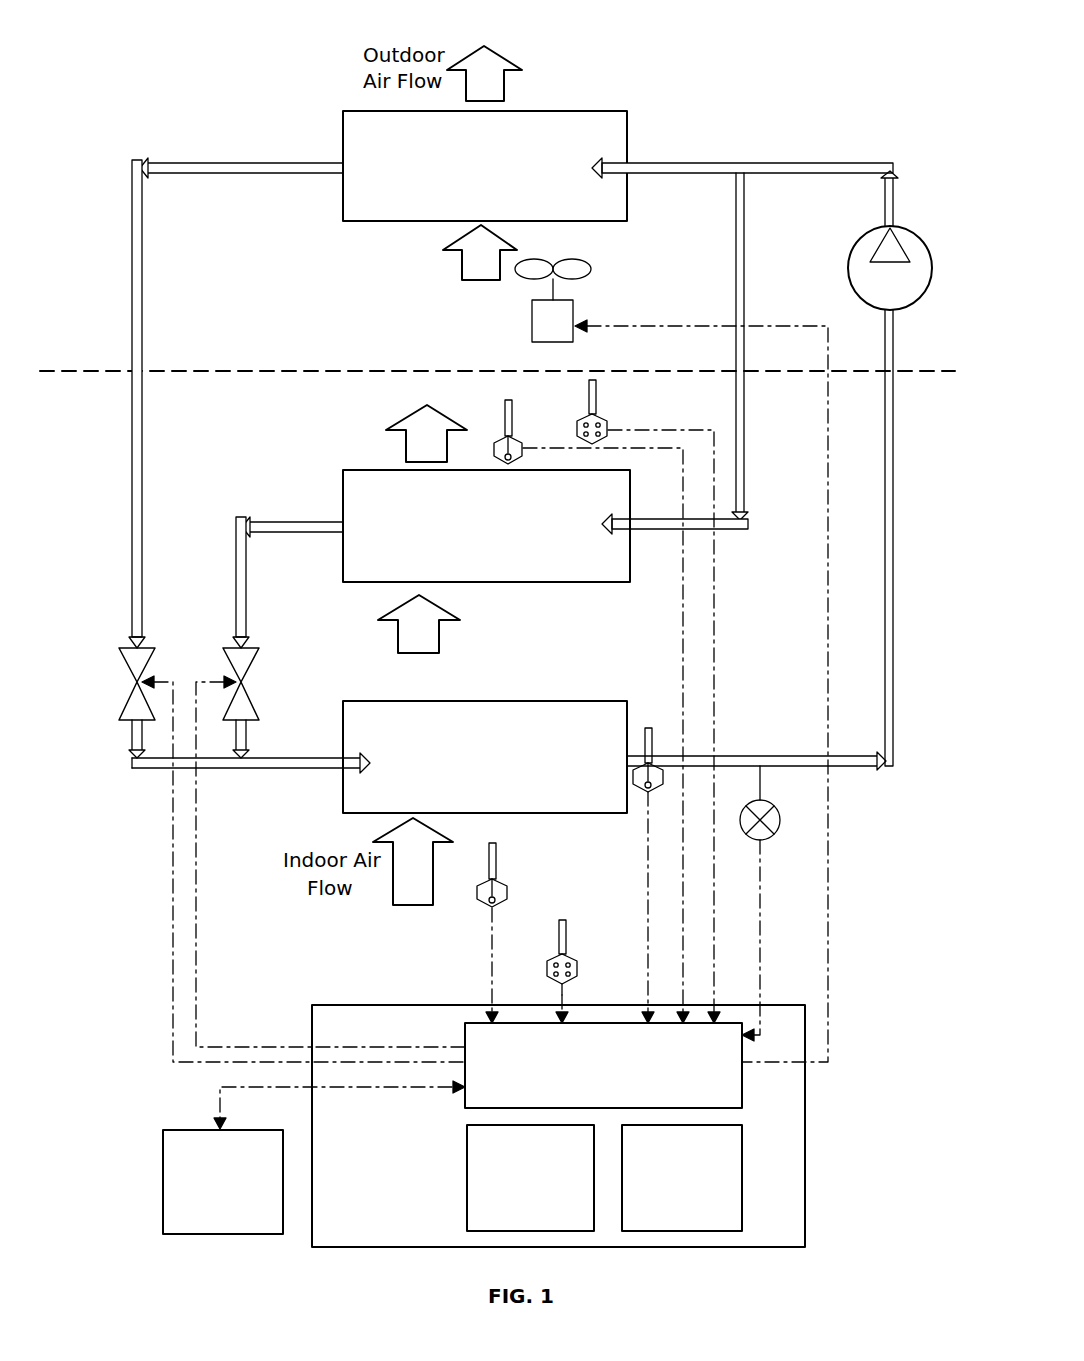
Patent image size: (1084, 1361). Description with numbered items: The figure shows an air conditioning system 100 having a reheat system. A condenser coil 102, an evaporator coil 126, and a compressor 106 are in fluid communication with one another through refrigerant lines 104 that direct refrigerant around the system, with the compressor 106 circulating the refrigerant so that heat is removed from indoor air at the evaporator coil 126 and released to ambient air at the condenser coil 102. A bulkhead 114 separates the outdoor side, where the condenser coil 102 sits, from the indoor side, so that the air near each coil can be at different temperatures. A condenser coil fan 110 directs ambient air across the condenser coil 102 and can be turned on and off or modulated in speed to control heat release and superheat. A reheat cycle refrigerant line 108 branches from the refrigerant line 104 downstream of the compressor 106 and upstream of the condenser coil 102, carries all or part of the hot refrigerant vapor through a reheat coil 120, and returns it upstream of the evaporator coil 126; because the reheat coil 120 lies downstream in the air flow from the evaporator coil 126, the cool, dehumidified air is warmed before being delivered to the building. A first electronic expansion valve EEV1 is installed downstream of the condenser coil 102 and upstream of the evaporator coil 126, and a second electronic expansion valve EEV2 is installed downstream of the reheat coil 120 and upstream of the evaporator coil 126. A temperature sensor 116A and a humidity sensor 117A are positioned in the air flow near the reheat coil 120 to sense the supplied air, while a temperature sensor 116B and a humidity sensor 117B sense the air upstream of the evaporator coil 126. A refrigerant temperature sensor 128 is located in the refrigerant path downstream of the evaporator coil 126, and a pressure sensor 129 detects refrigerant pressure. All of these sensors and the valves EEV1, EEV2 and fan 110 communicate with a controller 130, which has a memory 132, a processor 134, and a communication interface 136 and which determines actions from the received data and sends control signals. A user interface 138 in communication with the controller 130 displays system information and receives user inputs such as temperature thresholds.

The air conditioning system 100 is at (285, 52).
The condenser coil 102 is at (485, 166).
The refrigerant line 104 is at (172, 162).
The compressor 106 is at (908, 228).
The reheat cycle refrigerant line 108 is at (736, 290).
The condenser coil fan 110 is at (532, 335).
The bulkhead 114 is at (250, 370).
The temperature sensor 116A is at (511, 425).
The humidity sensor 117A is at (597, 393).
The temperature sensor 116B is at (497, 870).
The humidity sensor 117B is at (610, 935).
The reheat coil 120 is at (486, 526).
The evaporator coil 126 is at (485, 757).
The refrigerant temperature sensor 128 is at (648, 728).
The pressure sensor 129 is at (768, 842).
The controller 130 is at (558, 1126).
The memory 132 is at (530, 1178).
The processor 134 is at (682, 1178).
The communication interface 136 is at (603, 1065).
The user interface 138 is at (314, 1157).
The first electronic expansion valve EEV1 is at (125, 700).
The second electronic expansion valve EEV2 is at (255, 652).